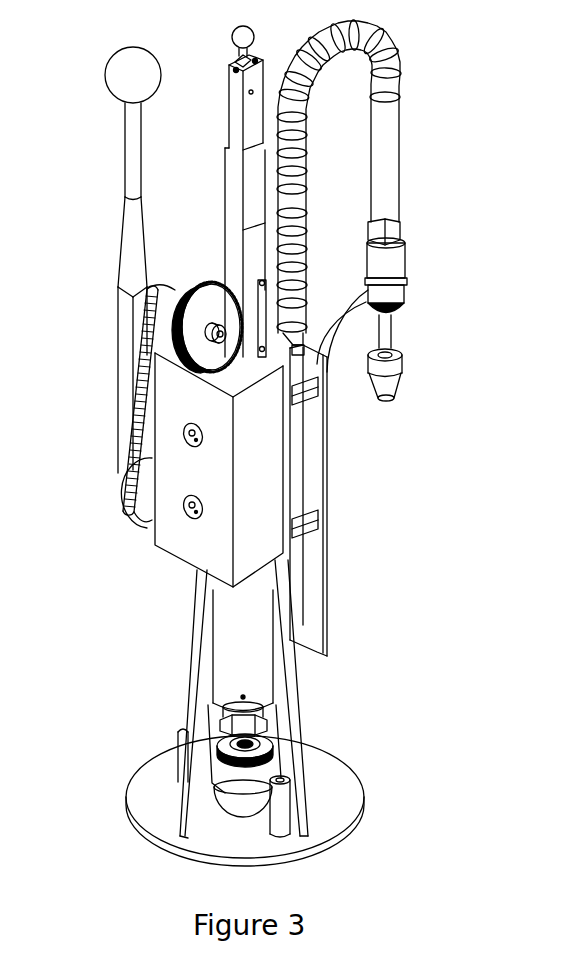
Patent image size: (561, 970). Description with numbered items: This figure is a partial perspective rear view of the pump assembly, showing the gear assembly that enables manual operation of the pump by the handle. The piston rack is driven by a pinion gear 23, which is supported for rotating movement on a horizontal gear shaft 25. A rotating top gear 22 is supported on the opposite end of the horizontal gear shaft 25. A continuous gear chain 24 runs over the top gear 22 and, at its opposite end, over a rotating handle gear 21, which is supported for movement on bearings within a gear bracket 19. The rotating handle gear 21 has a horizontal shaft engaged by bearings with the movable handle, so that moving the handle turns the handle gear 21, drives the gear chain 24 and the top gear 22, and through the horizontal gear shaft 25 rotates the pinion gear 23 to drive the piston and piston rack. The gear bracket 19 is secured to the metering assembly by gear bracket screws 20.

The gear bracket 19 is at (247, 420).
The gear bracket screws 20 is at (202, 442).
The rotating handle gear 21 is at (145, 494).
The top gear 22 is at (180, 318).
The pinion gear 23 is at (223, 307).
The gear chain 24 is at (137, 350).
The horizontal gear shaft 25 is at (223, 335).